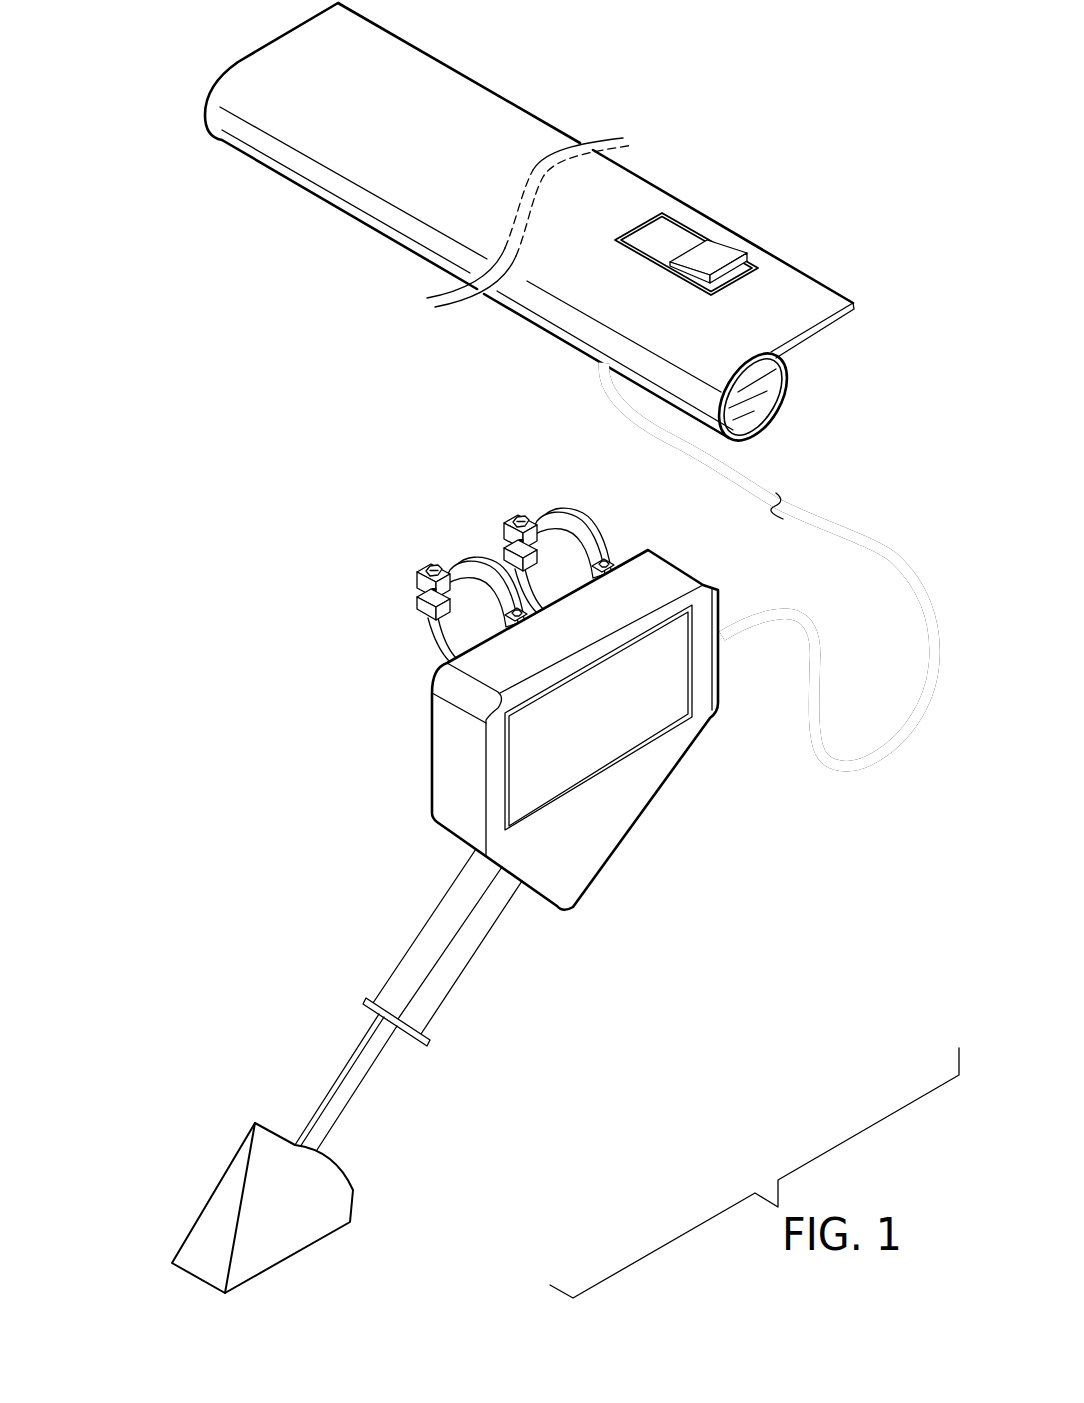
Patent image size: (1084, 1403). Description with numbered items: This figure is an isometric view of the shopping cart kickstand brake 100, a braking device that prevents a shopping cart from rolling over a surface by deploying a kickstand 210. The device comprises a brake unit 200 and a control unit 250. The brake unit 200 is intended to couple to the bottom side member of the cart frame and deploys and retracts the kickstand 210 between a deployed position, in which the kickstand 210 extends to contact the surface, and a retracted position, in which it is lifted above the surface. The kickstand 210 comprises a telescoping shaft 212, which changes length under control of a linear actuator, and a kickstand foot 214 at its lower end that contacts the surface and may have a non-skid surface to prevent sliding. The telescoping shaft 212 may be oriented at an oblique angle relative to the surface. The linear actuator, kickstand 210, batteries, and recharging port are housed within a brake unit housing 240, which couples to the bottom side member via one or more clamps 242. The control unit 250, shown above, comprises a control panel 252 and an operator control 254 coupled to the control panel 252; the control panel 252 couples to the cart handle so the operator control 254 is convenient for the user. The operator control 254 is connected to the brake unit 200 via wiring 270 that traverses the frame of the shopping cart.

The shopping cart kickstand brake 100 is at (790, 118).
The brake unit 200 is at (398, 874).
The kickstand 210 is at (354, 1071).
The telescoping shaft 212 is at (335, 1082).
The kickstand foot 214 is at (241, 1208).
The brake unit housing 240 is at (647, 810).
The clamps 242 is at (520, 553).
The control unit 250 is at (511, 263).
The control panel 252 is at (513, 133).
The operator control 254 is at (720, 262).
The wiring 270 is at (872, 545).